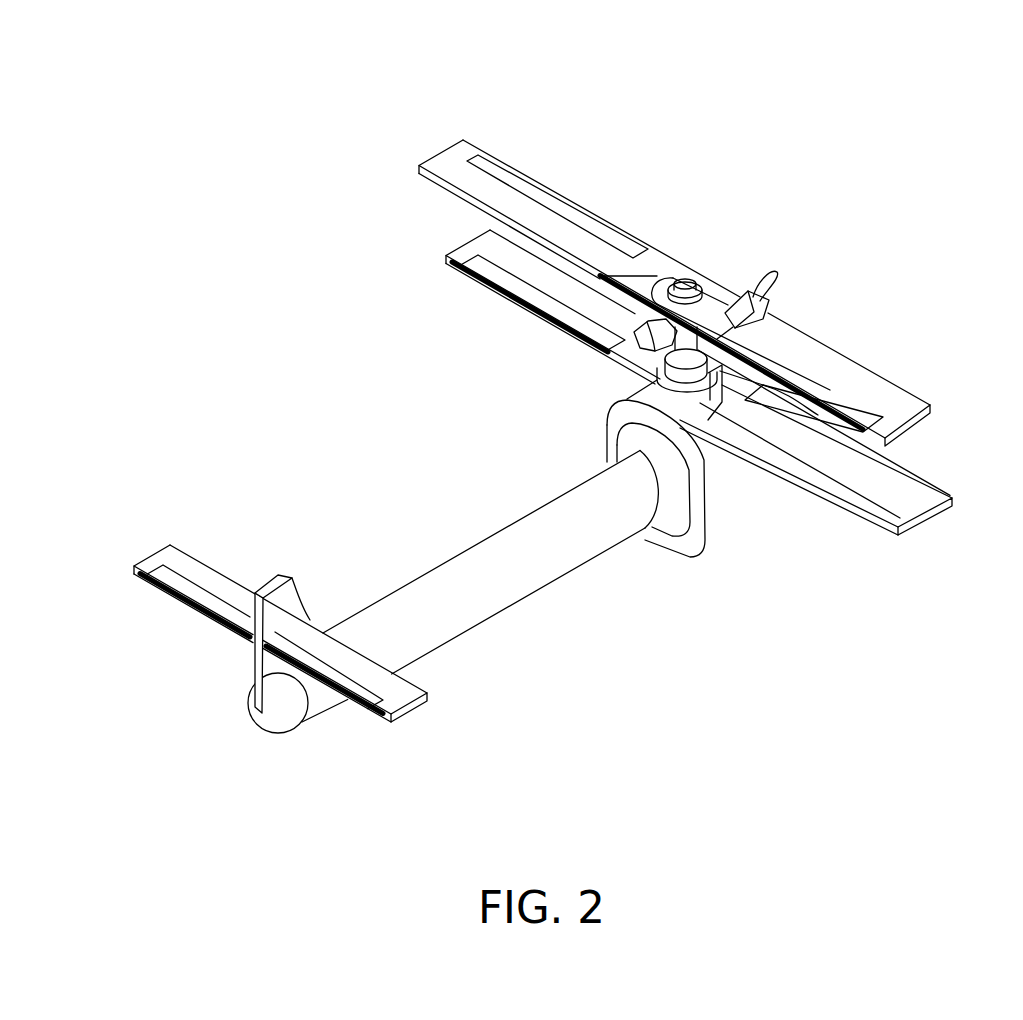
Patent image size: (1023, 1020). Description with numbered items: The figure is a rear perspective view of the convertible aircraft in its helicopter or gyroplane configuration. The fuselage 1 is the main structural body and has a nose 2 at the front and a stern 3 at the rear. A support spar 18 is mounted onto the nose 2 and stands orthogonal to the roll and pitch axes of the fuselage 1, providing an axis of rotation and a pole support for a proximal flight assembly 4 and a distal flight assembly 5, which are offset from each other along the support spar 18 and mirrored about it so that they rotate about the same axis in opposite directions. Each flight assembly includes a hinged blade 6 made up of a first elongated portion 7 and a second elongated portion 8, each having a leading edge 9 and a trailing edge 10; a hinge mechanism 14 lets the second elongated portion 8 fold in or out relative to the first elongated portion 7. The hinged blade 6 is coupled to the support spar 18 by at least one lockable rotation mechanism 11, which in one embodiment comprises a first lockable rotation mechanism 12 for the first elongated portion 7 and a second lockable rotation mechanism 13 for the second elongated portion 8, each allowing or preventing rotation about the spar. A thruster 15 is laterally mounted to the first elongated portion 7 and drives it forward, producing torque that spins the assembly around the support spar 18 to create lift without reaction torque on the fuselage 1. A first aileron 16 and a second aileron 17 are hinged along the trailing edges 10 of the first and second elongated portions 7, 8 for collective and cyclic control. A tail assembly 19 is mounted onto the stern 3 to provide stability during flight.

The fuselage 1 is at (456, 621).
The nose 2 is at (675, 530).
The stern 3 is at (280, 683).
The proximal flight assembly 4 is at (972, 548).
The distal flight assembly 5 is at (393, 119).
The hinged blade 6 is at (662, 337).
The first elongated portion 7 is at (907, 403).
The second elongated portion 8 is at (466, 146).
The leading edge 9 is at (460, 203).
The trailing edge 10 is at (535, 169).
The lockable rotation mechanism 11 is at (651, 317).
The first lockable rotation mechanism 12 is at (650, 370).
The second lockable rotation mechanism 13 is at (700, 288).
The hinge mechanism 14 is at (662, 274).
The thruster 15 is at (650, 324).
The first aileron 16 is at (490, 278).
The second aileron 17 is at (587, 217).
The support spar 18 is at (718, 390).
The tail assembly 19 is at (258, 648).